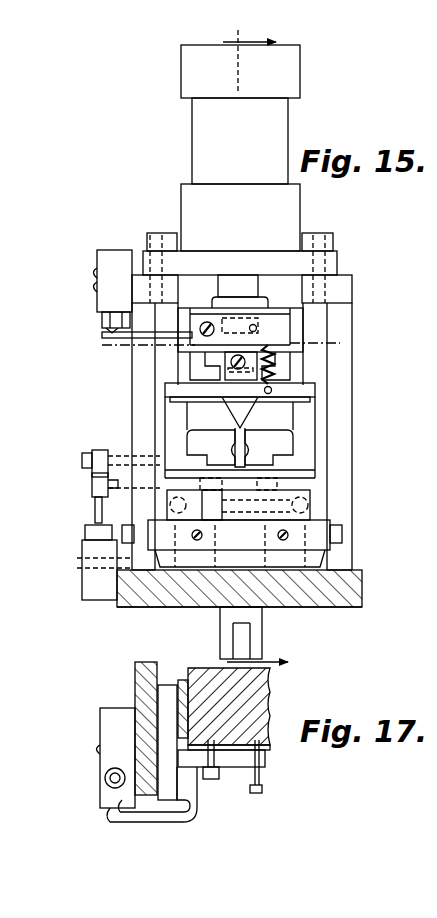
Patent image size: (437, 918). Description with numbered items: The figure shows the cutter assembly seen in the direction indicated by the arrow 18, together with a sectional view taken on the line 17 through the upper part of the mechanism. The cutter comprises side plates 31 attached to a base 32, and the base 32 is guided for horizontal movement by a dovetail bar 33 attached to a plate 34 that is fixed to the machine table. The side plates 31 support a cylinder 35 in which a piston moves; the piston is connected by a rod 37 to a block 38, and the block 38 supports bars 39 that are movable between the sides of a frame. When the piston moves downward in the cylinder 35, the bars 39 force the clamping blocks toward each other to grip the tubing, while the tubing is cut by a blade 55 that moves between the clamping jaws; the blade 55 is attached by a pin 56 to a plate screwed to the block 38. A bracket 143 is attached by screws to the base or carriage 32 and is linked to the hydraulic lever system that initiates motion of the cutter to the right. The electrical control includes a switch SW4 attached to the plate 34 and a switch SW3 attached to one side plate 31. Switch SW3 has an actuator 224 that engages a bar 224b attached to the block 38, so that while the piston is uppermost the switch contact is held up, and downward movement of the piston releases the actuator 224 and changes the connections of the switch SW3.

In FIG. 15, the arrow 18 is at (280, 42).
In FIG. 17, the arrow 18 is at (270, 654).
In FIG. 15, the cylinder 35 is at (280, 137).
In FIG. 15, the rod 37 is at (232, 288).
In FIG. 15, the side plates 31 is at (133, 414).
In FIG. 17, the side plates 31 is at (140, 690).
In FIG. 15, the bars 39 is at (300, 328).
In FIG. 17, the bars 39 is at (175, 683).
In FIG. 15, the actuator 224 is at (104, 322).
In FIG. 17, the actuator 224 is at (105, 790).
In FIG. 15, the bar 224b is at (108, 340).
In FIG. 17, the bar 224b is at (130, 816).
In FIG. 15, the switch SW3 is at (97, 268).
In FIG. 17, the switch SW3 is at (100, 730).
In FIG. 15, the switch SW4 is at (95, 590).
In FIG. 15, the section line 17- 17 is at (115, 349).
In FIG. 15, the pin 56 is at (238, 367).
In FIG. 15, the blade 55 is at (250, 420).
In FIG. 15, the base 32 is at (312, 531).
In FIG. 15, the dovetail bar 33 is at (239, 588).
In FIG. 15, the plate 34 is at (350, 607).
In FIG. 15, the bracket 143 is at (222, 622).
In FIG. 17, the block 38 is at (252, 712).